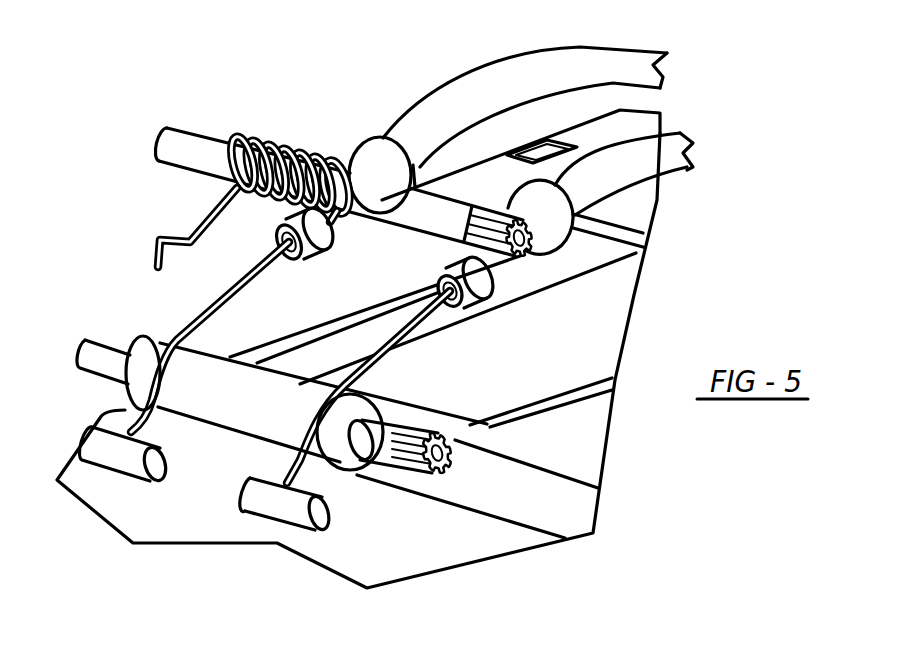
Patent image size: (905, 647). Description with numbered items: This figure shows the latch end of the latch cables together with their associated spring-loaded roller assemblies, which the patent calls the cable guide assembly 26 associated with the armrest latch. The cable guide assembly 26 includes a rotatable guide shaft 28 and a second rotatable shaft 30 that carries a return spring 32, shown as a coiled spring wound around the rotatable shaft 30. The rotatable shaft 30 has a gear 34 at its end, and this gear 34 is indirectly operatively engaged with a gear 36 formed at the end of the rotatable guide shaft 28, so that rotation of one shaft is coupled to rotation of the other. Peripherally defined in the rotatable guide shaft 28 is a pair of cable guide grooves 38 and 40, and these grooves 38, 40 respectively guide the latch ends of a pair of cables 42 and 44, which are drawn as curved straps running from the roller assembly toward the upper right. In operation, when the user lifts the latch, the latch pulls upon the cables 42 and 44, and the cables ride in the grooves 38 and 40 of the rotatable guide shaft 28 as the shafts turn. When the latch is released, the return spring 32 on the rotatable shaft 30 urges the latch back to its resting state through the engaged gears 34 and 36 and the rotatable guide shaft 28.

The cable guide assembly 26 is at (106, 248).
The rotatable guide shaft 28 is at (247, 408).
The rotatable shaft 30 is at (187, 147).
The return spring 32 is at (289, 143).
The gear 34 is at (530, 243).
The gear 36 is at (407, 470).
The cable guide groove 38 is at (112, 413).
The cable guide groove 40 is at (350, 470).
The cable 42 is at (465, 96).
The cable 44 is at (630, 163).